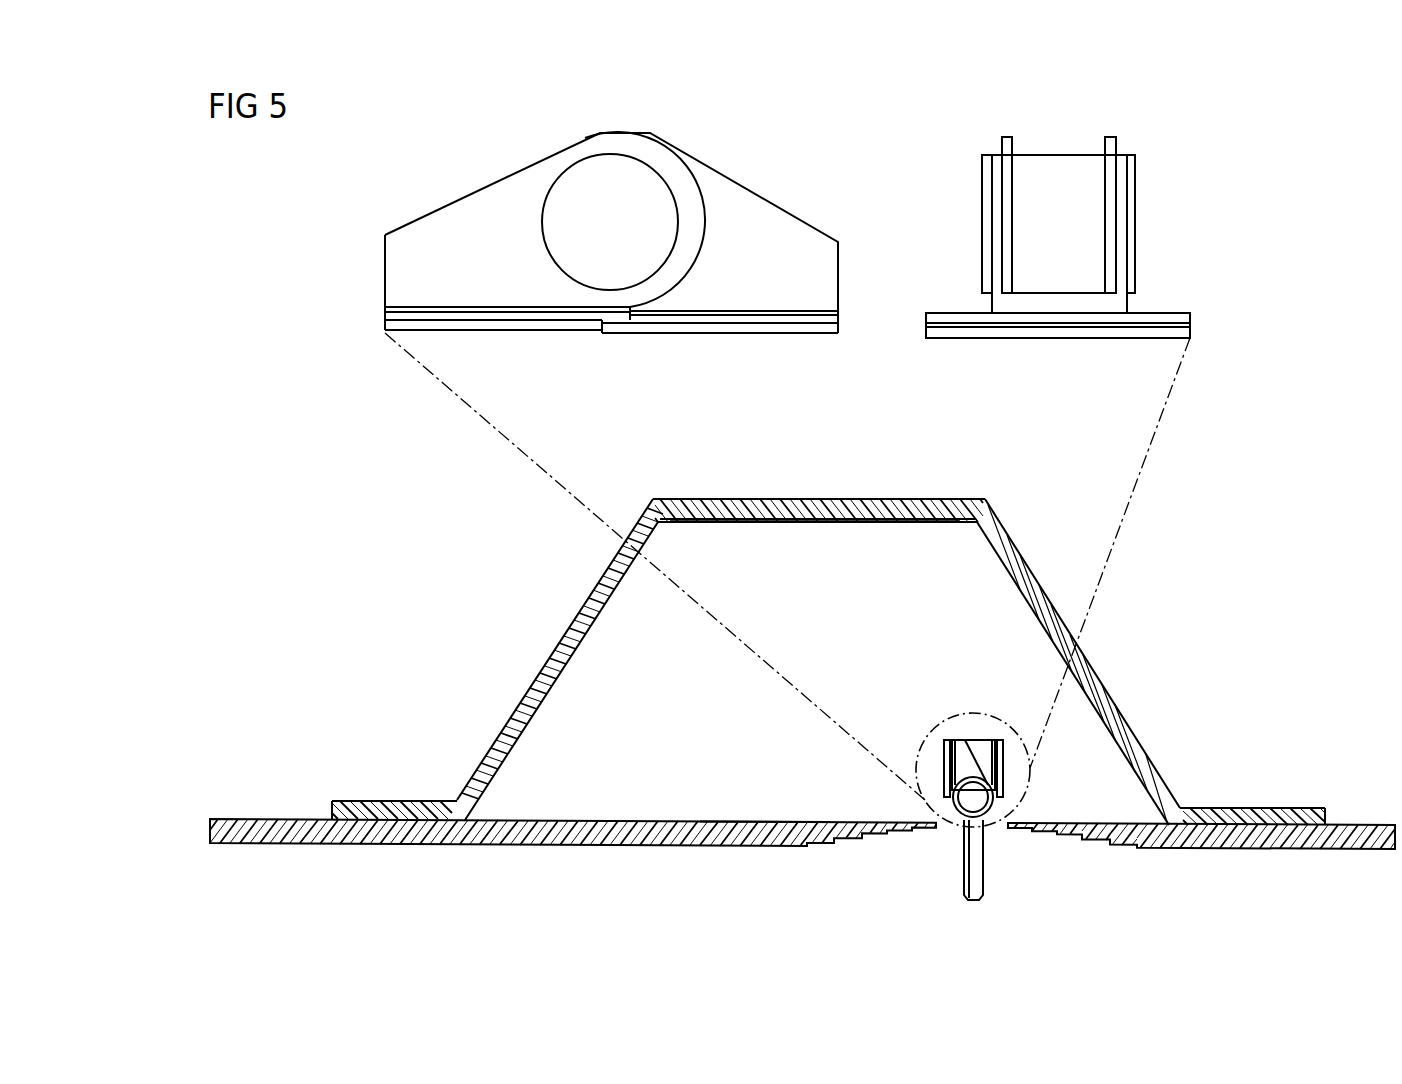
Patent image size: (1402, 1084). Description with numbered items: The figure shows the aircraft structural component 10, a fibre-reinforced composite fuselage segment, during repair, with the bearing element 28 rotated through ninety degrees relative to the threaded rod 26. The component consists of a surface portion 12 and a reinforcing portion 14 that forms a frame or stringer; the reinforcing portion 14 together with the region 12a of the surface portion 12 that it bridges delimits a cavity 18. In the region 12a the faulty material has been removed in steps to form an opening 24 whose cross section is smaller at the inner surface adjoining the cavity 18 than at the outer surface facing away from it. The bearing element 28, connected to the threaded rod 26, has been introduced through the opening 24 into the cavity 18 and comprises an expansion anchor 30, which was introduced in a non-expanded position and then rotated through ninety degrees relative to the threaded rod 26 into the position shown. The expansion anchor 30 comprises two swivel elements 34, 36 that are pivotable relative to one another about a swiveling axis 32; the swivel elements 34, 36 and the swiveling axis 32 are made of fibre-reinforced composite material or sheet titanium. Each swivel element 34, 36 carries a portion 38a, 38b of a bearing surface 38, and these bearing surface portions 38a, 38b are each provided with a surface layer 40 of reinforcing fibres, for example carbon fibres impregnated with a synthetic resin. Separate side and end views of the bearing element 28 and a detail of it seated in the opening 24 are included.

The aircraft structural component 10 is at (1094, 593).
The surface portion 12 is at (410, 845).
The region of the surface portion 12a is at (765, 822).
The reinforcing portion 14 is at (790, 500).
The cavity 18 is at (905, 540).
The opening 24 is at (1002, 838).
The threaded rod 26 is at (965, 880).
The bearing element 28 is at (358, 242).
The expansion anchor 30 is at (420, 232).
The swiveling axis 32 is at (685, 232).
The swivel element 34 is at (480, 200).
The swivel element 36 is at (770, 217).
The bearing surface 38 is at (556, 348).
The bearing surface portion 38a is at (487, 332).
The bearing surface portion 38b is at (720, 334).
The surface layer 40 is at (842, 325).